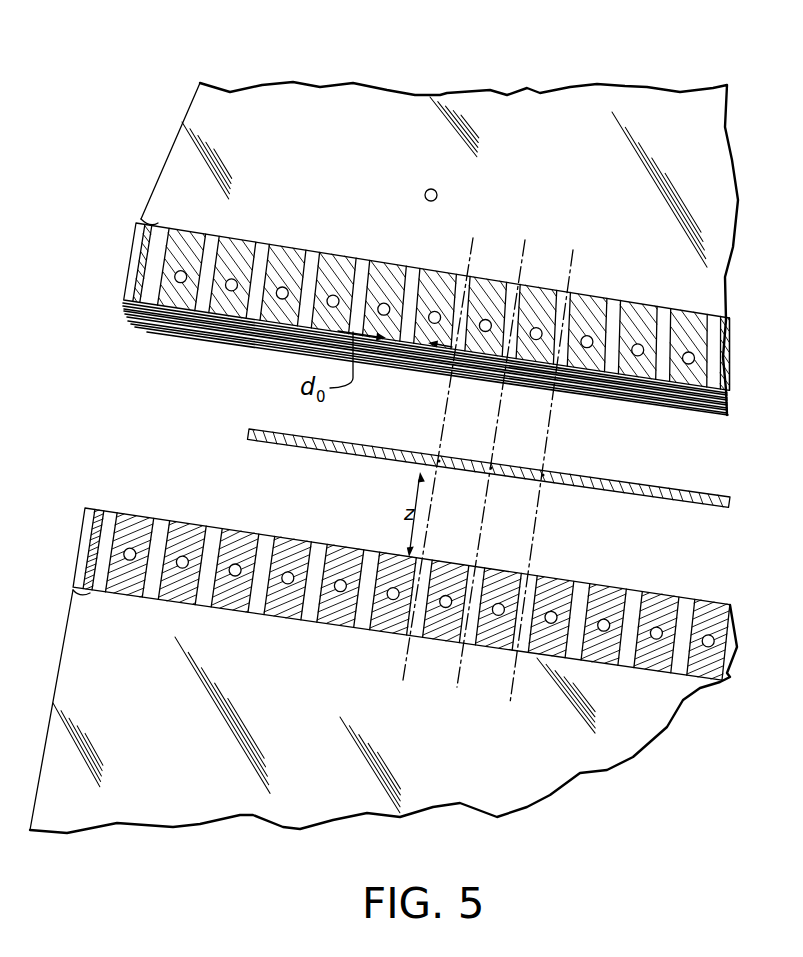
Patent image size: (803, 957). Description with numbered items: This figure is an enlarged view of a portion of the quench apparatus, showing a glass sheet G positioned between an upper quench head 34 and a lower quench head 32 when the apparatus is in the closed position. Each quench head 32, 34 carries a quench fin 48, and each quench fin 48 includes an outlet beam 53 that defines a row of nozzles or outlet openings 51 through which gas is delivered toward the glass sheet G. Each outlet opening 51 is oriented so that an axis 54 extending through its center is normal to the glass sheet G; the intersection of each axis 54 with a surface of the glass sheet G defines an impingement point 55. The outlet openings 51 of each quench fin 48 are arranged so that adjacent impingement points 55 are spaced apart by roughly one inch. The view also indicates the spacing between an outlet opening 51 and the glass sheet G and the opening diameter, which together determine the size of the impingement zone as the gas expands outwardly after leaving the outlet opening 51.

The quench head 32 is at (80, 496).
The quench head 34 is at (148, 104).
The quench fin 48 is at (138, 178).
The outlet opening 51 is at (265, 272).
The outlet beam 53 is at (592, 296).
The axis 54 is at (440, 427).
The impingement point 55 is at (446, 455).
The glass sheet G is at (648, 500).